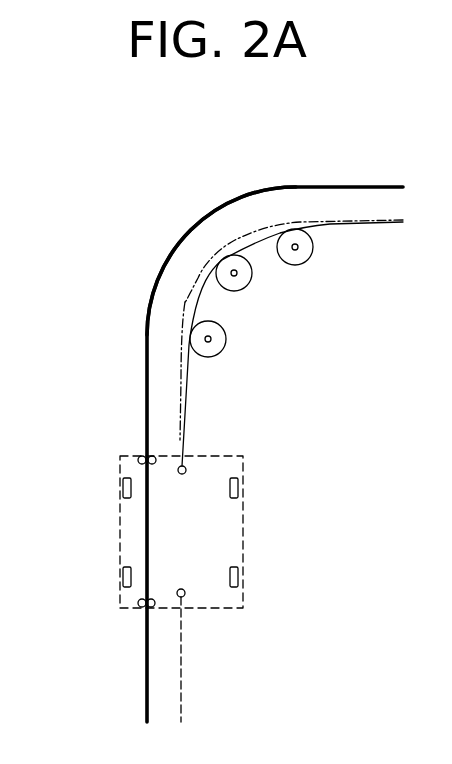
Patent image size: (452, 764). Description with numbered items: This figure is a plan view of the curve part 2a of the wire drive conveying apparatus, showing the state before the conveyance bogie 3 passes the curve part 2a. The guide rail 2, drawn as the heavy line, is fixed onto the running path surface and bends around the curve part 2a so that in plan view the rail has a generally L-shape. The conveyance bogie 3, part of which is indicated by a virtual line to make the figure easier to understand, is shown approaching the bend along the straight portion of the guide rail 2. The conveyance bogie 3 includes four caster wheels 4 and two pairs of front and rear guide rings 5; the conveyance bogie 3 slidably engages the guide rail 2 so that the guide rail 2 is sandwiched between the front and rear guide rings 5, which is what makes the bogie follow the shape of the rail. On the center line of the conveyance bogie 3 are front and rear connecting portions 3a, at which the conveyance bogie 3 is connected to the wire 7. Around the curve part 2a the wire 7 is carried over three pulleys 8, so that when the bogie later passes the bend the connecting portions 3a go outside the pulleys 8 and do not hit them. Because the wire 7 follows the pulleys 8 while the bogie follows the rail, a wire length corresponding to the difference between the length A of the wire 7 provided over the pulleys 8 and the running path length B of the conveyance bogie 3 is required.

The guide rail 2 is at (147, 412).
The curve part 2a is at (188, 222).
The length of the wire provided over the pulleys A is at (254, 240).
The running path length of the conveyance bogie B is at (185, 302).
The conveyance bogie 3 is at (243, 526).
The connecting portions 3a is at (178, 475).
The caster wheels 4 is at (240, 485).
The guide rings 5 is at (137, 606).
The wire 7 is at (183, 672).
The pulleys 8 is at (307, 263).